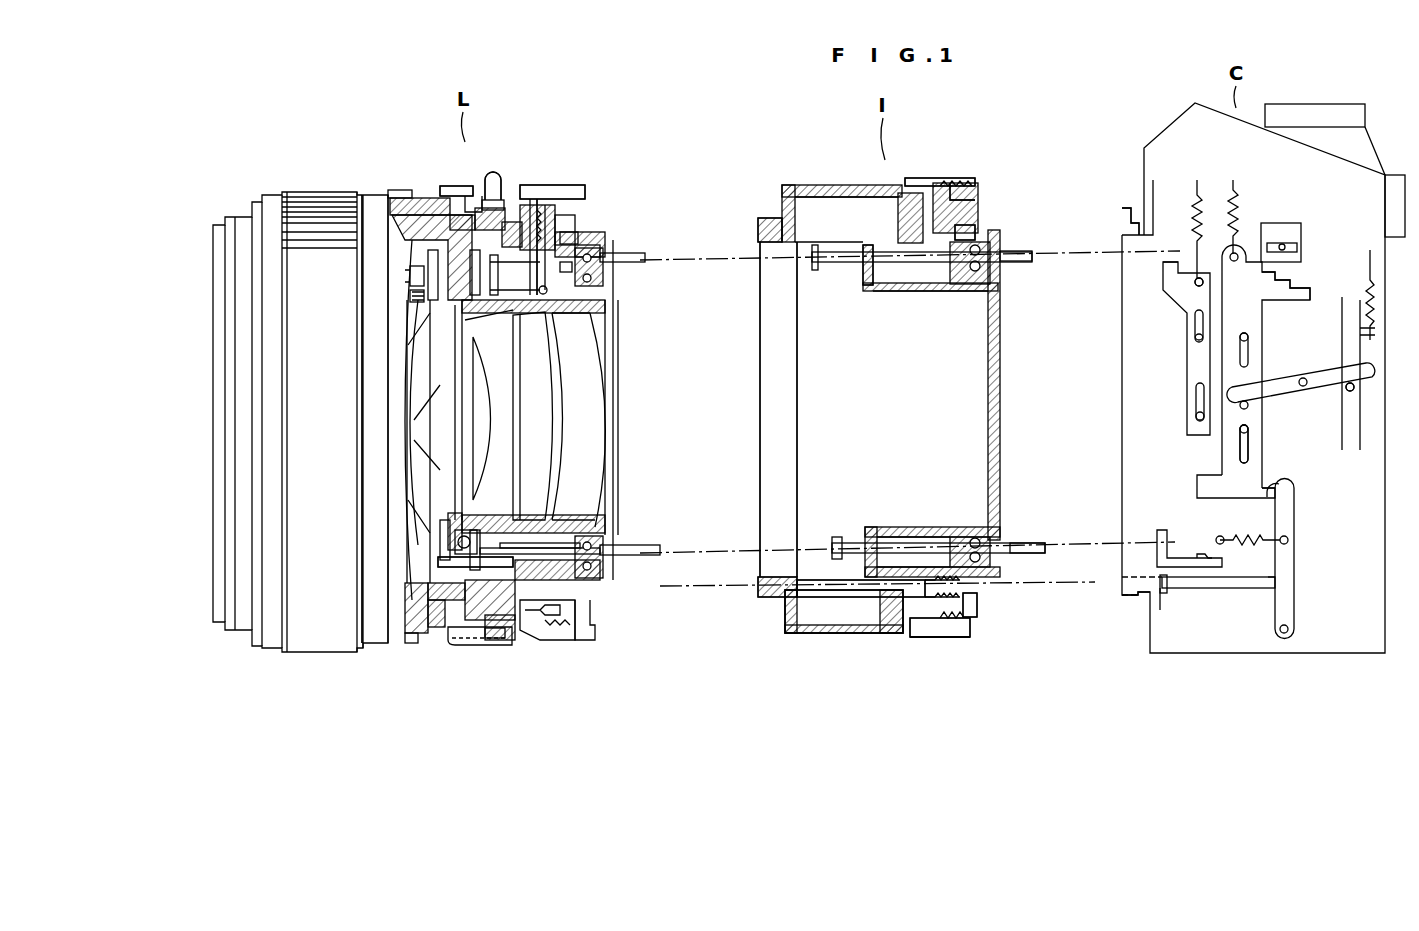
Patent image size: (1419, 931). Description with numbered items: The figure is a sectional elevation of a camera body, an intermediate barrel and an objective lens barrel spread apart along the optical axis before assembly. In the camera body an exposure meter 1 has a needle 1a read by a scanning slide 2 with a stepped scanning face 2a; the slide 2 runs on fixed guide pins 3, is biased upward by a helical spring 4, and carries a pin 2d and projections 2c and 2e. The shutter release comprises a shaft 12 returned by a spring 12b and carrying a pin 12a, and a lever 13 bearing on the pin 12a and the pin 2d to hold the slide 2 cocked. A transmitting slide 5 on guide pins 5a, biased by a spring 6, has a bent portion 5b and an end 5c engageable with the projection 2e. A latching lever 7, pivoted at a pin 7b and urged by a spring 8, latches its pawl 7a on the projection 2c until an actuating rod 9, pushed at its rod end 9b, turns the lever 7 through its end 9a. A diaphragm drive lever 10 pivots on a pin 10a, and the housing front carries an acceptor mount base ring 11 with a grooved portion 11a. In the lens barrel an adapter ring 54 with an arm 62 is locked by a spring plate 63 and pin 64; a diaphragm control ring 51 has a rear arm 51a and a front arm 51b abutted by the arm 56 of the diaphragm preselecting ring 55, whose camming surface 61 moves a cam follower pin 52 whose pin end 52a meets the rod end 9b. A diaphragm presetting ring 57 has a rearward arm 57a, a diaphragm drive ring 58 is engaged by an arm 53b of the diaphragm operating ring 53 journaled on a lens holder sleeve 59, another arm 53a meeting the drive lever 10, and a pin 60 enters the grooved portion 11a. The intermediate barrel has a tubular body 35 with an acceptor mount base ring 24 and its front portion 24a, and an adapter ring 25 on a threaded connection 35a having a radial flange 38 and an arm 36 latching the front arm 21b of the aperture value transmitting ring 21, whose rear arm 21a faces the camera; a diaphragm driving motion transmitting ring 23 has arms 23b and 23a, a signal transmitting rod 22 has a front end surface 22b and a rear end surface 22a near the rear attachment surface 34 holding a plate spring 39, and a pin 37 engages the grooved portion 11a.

The exposure meter 1 is at (1281, 223).
The needle 1a is at (1283, 247).
The scanning slide 2 is at (1262, 328).
The stepped scanning face 2a is at (1295, 282).
The projection of scanning slide 2c is at (1268, 494).
The pin on scanning slide 2d is at (1249, 406).
The projection of scanning slide 2e is at (1197, 488).
The fixed guide pins 3 is at (1250, 440).
The helical spring 4 is at (1230, 209).
The transmitting slide 5 is at (1190, 392).
The fixed guide pins 5a is at (1195, 333).
The rectangularly bent portion 5b is at (1163, 262).
The end of transmitting slide 5c is at (1195, 435).
The helical spring 6 is at (1197, 221).
The latching lever 7 is at (1290, 542).
The pawl 7a is at (1290, 487).
The pivot pin 7b is at (1288, 629).
The helical spring 8 is at (1254, 545).
The actuating rod 9 is at (1203, 588).
The end of actuating rod 9a is at (1270, 588).
The rod end 9b is at (1122, 588).
The diaphragm drive lever 10 is at (1162, 530).
The pin 10a is at (1202, 554).
The acceptor mount base ring 11 is at (1130, 595).
The grooved portion 11a is at (1125, 208).
The shaft 12 is at (1342, 447).
The pin 12a is at (1348, 391).
The helical return spring 12b is at (1368, 278).
The lever 13 is at (1317, 376).
The aperture value transmitting ring 21 is at (998, 256).
The rear arm of transmitting ring 21a is at (1025, 255).
The front arm of transmitting ring 21b is at (833, 257).
The signal transmitting rod 22 is at (848, 597).
The rear end surface of rod 22a is at (965, 590).
The front end surface of rod 22b is at (764, 597).
The diaphragm driving motion transmitting ring 23 is at (1000, 560).
The rear arm of driving motion ring 23a is at (1025, 543).
The front arm of driving motion ring 23b is at (837, 537).
The acceptor mount base ring 24 is at (760, 345).
The front flange of housing 24a is at (762, 220).
The adapter ring 25 is at (934, 178).
The rear attachment surface 34 is at (977, 605).
The tubular body 35 is at (886, 633).
The threaded connection 35a is at (940, 637).
The arm 36 is at (905, 232).
The pin 37 is at (978, 235).
The radial flange 38 is at (970, 637).
The plate spring 39 is at (958, 185).
The diaphragm control ring 51 is at (595, 270).
The rear arm of diaphragm control ring 51a is at (618, 262).
The front arm of diaphragm control ring 51b is at (526, 315).
The cam follower pin 52 is at (535, 615).
The pin end 52a is at (593, 615).
The diaphragm operating ring 53 is at (595, 578).
The arm 53a is at (625, 545).
The drive bar 53b is at (505, 557).
The adapter ring 54 is at (550, 186).
The diaphragm preselecting ring 55 is at (446, 187).
The arm 56 is at (496, 186).
The diaphragm presetting ring 57 is at (484, 338).
The arm 57a is at (488, 318).
The diaphragm drive ring 58 is at (430, 560).
The lens holder sleeve 59 is at (576, 357).
The pin 60 is at (590, 250).
The camming surface 61 is at (500, 638).
The arm 62 is at (540, 215).
The spring plate 63 is at (572, 222).
The pin 64 is at (578, 238).